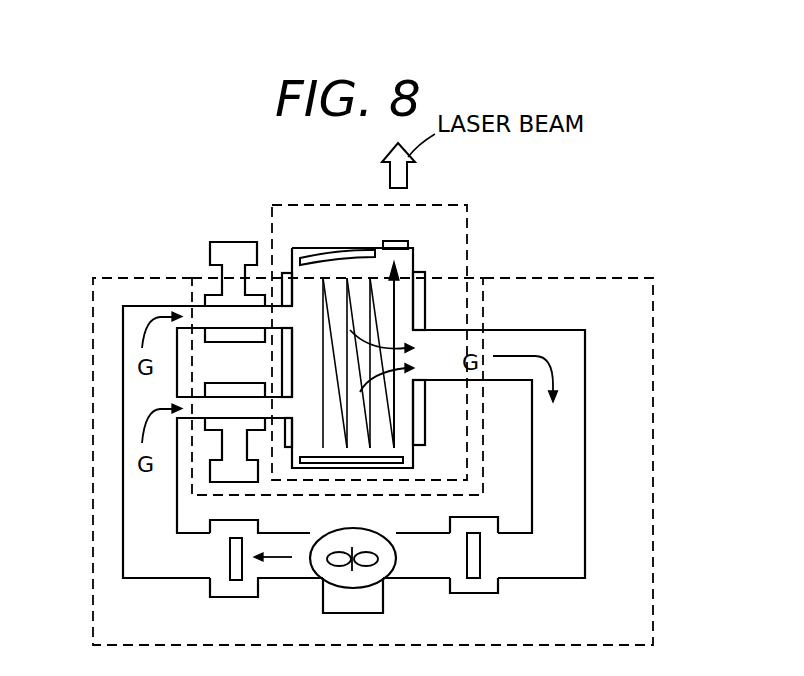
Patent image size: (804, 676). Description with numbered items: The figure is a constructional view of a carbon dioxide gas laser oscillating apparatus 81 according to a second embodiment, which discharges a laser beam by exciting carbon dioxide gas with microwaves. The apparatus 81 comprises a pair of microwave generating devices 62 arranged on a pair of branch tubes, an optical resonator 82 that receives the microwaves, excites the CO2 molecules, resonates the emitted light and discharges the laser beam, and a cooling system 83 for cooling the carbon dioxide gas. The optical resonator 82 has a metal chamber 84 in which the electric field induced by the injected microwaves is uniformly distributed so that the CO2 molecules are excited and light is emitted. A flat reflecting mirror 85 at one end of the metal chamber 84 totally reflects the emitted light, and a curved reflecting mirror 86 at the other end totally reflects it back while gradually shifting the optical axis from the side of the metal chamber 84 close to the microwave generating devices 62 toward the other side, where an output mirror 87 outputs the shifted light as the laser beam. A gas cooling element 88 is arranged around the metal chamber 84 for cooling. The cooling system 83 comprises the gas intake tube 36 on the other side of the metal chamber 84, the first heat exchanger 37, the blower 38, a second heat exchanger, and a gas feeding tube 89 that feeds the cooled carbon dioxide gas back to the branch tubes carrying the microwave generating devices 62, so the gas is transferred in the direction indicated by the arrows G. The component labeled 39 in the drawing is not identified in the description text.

The carbon dioxide gas laser oscillating apparatus 81 is at (125, 232).
The optical resonator 82 is at (467, 207).
The cooling system 83 is at (610, 277).
The metal chamber 84 is at (412, 264).
The flat reflecting mirror 85 is at (405, 458).
The curved reflecting mirror 86 is at (325, 250).
The output mirror 87 is at (400, 243).
The gas cooling element 88 is at (425, 302).
The gas feeding tube 89 is at (130, 436).
The microwave generating devices 62 is at (222, 243).
The gas intake tube 36 is at (580, 548).
The first heat exchanger 37 is at (482, 558).
The blower 38 is at (337, 575).
The filter 39 is at (233, 580).